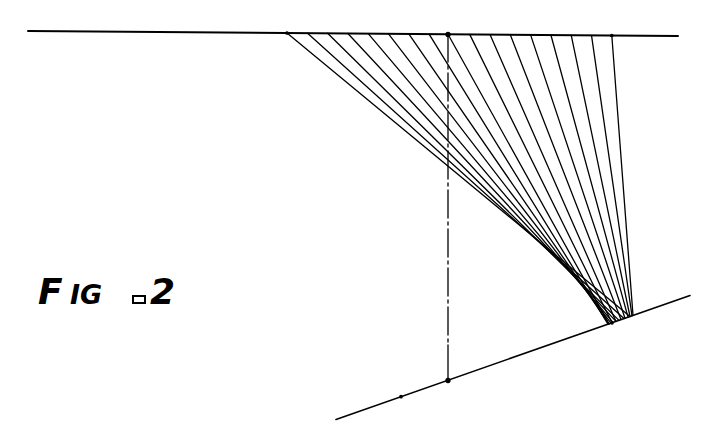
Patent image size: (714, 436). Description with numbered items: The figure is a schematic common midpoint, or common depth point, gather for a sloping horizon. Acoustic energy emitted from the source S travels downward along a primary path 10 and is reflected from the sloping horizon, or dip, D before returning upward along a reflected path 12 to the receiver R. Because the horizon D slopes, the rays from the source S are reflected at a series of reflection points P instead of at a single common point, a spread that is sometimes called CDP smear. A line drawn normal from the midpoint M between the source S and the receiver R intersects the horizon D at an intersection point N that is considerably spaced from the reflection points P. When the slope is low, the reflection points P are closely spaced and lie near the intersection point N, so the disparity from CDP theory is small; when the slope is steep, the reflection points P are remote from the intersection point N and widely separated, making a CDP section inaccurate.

The primary path 10 is at (355, 90).
The reflected path 12 is at (617, 92).
The source S is at (281, 33).
The midpoint M is at (450, 33).
The receiver R is at (649, 35).
The sloping horizon D is at (401, 398).
The intersection point N is at (449, 380).
The reflection points P is at (627, 323).